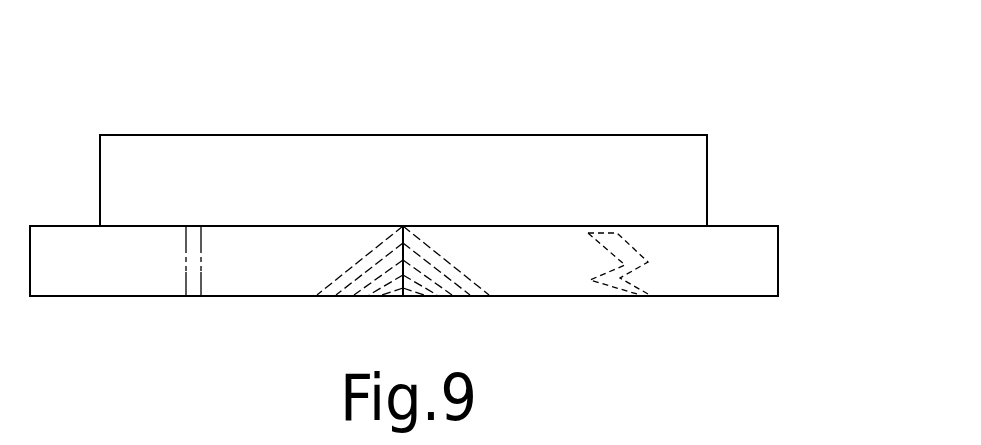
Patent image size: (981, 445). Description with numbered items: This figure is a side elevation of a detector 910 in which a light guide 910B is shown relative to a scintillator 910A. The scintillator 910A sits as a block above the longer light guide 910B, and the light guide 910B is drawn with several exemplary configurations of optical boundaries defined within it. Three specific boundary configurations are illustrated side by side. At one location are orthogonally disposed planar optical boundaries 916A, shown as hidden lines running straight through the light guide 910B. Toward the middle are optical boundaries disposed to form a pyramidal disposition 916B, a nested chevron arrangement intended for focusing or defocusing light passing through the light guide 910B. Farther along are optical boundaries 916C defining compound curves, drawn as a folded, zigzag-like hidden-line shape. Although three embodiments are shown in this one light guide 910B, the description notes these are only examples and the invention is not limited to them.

The detector 910 is at (433, 178).
The scintillator 910A is at (683, 131).
The light guide 910B is at (751, 220).
The orthogonally disposed planar optical boundaries 916A is at (186, 277).
The optical boundaries in a pyramidal disposition 916B is at (382, 282).
The optical boundaries defining compound curves 916C is at (625, 273).